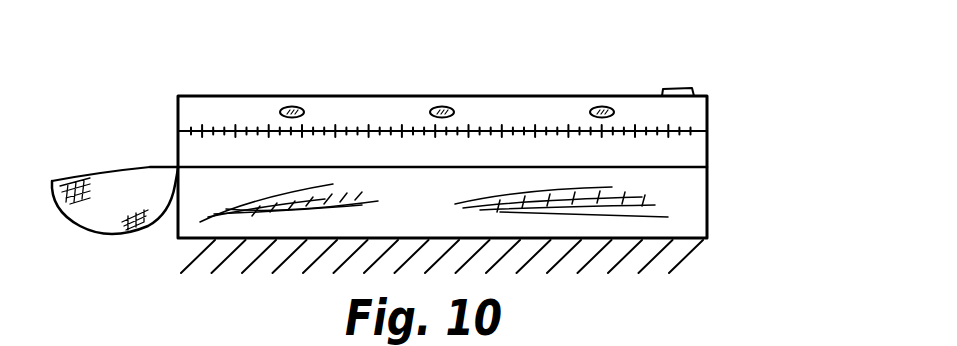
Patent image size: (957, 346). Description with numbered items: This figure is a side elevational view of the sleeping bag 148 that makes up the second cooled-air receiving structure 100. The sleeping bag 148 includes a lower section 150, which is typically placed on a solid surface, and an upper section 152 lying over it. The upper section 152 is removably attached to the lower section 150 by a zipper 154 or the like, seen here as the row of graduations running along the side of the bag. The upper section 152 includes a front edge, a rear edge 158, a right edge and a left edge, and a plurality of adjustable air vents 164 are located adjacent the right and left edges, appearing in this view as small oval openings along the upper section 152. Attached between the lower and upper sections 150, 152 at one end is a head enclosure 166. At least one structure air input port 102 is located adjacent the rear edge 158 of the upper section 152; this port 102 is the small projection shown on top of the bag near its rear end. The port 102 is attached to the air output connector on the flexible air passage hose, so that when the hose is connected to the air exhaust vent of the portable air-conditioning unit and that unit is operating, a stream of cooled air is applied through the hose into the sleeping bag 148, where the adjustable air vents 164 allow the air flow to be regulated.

The second cooled-air receiving structure 100 is at (464, 137).
The sleeping bag 148 is at (690, 70).
The upper section 152 is at (187, 108).
The structure air input port 102 is at (697, 90).
The zipper 154 is at (412, 128).
The adjustable air vents 164 is at (296, 107).
The rear edge 158 is at (712, 157).
The lower section 150 is at (685, 202).
The head enclosure 166 is at (147, 173).